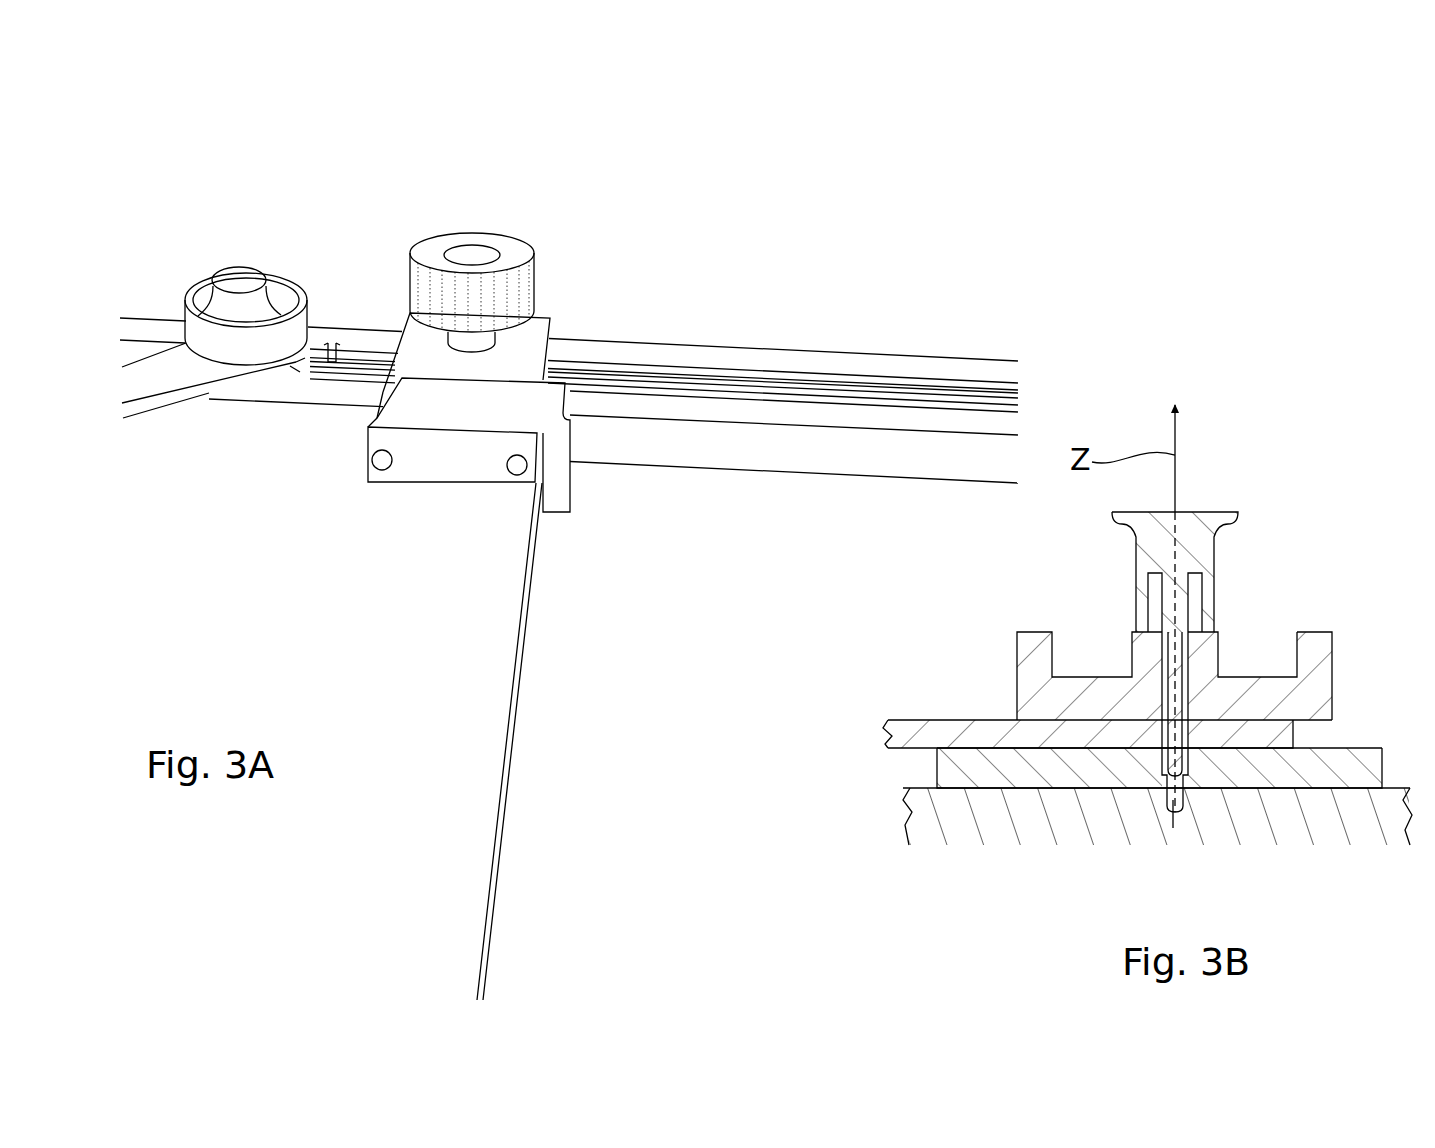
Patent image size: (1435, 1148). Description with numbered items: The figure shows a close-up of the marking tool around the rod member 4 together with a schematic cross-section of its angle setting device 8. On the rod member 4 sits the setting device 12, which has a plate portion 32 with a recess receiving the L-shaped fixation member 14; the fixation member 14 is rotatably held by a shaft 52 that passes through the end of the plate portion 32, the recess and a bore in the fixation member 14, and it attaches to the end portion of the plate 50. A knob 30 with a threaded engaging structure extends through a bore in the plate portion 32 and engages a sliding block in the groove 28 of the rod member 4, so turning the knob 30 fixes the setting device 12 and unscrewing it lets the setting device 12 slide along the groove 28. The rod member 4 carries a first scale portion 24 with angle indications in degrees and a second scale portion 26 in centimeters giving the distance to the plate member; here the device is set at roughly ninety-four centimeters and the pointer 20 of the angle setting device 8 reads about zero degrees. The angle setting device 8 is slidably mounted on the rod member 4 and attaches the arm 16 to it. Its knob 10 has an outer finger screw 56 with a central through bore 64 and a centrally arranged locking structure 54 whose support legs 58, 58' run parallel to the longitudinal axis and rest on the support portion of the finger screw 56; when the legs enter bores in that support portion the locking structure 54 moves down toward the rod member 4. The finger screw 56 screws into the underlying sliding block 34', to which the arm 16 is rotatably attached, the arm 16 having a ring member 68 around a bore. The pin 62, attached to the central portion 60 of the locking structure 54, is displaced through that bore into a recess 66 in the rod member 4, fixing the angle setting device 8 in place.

In FIG. 3A, the rod member 4 is at (569, 352).
In FIG. 3B, the rod member 4 is at (950, 830).
In FIG. 3A, the angle setting device 8 is at (234, 239).
In FIG. 3B, the angle setting device 8 is at (1206, 588).
In FIG. 3A, the knob 10 is at (234, 267).
In FIG. 3B, the knob 10 is at (1206, 654).
In FIG. 3A, the setting device 12 is at (509, 549).
In FIG. 3A, the fixation member 14 is at (509, 468).
In FIG. 3A, the arm 16 is at (145, 368).
In FIG. 3B, the arm 16 is at (935, 725).
In FIG. 3A, the pointer 20 is at (328, 355).
In FIG. 3A, the first scale portion 24 is at (360, 338).
In FIG. 3A, the second scale portion 26 is at (660, 392).
In FIG. 3A, the groove 28 is at (832, 390).
In FIG. 3A, the knob 30 is at (511, 263).
In FIG. 3A, the plate portion 32 is at (537, 330).
In FIG. 3A, the sliding block 34' is at (309, 419).
In FIG. 3B, the sliding block 34' is at (1095, 768).
In FIG. 3A, the plate 50 is at (505, 640).
In FIG. 3A, the shaft 52 is at (383, 462).
In FIG. 3A, the locking structure 54 is at (241, 273).
In FIG. 3B, the locking structure 54 is at (1200, 512).
In FIG. 3A, the finger screw 56 is at (186, 333).
In FIG. 3B, the finger screw 56 is at (1030, 662).
In FIG. 3B, the support leg 58 is at (1104, 602).
In FIG. 3B, the support leg 58' is at (1255, 594).
In FIG. 3B, the central portion 60 is at (1185, 610).
In FIG. 3B, the pin 62 is at (1195, 700).
In FIG. 3B, the through bore 64 is at (1166, 672).
In FIG. 3B, the recess 66 is at (1176, 815).
In FIG. 3B, the ring member 68 is at (1213, 733).